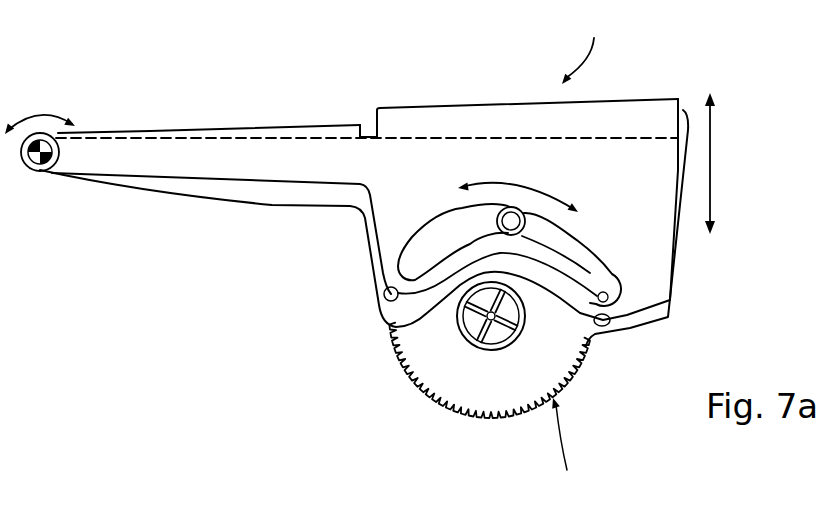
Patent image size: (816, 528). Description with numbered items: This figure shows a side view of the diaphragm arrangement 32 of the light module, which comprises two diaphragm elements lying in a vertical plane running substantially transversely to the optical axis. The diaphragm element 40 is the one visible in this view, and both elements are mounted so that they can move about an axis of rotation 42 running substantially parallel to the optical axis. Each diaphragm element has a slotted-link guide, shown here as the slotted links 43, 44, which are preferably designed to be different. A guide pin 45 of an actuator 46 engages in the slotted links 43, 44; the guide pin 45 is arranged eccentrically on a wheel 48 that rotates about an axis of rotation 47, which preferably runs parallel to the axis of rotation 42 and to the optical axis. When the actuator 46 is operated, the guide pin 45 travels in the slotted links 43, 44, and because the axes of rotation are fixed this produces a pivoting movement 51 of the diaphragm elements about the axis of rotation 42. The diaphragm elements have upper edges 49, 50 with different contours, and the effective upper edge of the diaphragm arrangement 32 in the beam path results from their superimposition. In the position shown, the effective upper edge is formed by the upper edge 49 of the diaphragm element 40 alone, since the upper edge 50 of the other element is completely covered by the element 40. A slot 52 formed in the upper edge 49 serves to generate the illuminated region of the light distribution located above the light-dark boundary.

The diaphragm arrangement 32 is at (589, 177).
The diaphragm element 40 is at (623, 118).
The axis of rotation 42 is at (40, 160).
The slotted-link guide 43 is at (440, 218).
The slotted-link guide 44 is at (253, 203).
The guide pin 45 is at (524, 230).
The actuator 46 is at (568, 450).
The axis of rotation 47 is at (468, 322).
The wheel 48 is at (463, 393).
The upper edge 49 is at (296, 126).
The upper edge 50 is at (205, 137).
The pivoting movement 51 is at (713, 155).
The slot 52 is at (372, 130).